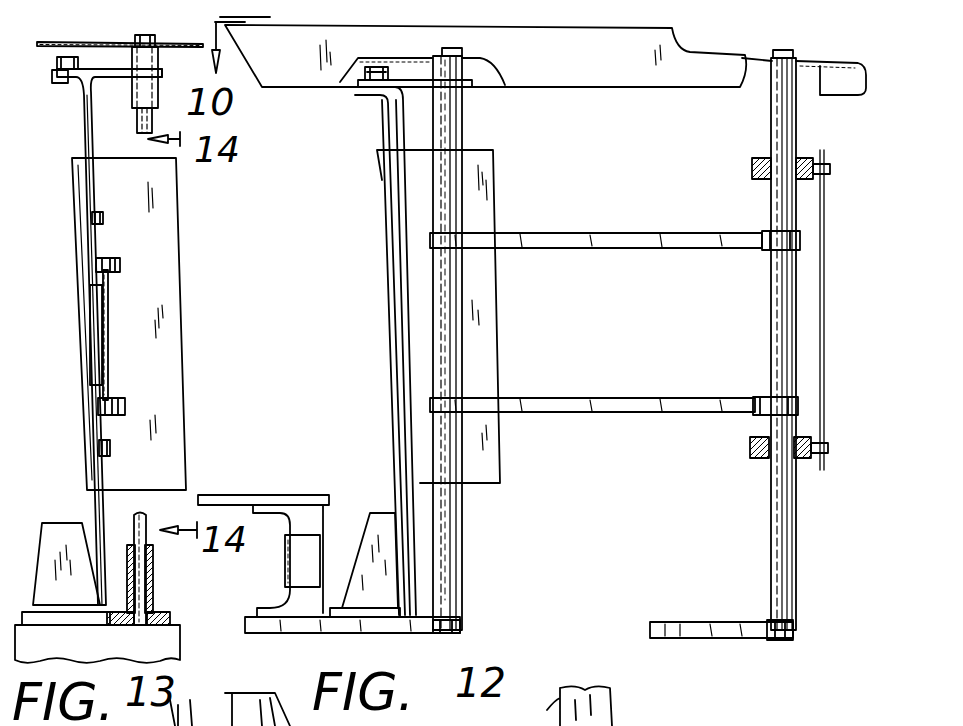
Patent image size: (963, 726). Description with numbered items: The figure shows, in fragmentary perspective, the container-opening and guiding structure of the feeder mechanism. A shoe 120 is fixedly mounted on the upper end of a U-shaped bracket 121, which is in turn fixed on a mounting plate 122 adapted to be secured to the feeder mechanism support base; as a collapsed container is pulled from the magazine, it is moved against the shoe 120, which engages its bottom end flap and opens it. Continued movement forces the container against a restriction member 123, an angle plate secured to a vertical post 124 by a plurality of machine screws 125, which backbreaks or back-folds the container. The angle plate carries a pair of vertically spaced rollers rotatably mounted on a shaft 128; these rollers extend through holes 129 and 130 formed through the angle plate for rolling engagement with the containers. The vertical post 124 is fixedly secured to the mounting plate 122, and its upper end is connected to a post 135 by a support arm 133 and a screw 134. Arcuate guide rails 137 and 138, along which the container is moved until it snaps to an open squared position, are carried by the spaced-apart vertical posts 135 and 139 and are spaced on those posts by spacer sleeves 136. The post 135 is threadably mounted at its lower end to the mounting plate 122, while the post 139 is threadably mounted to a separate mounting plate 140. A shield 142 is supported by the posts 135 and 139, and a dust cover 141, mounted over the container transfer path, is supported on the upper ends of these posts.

In FIG. 12, the shoe 120 is at (242, 495).
In FIG. 12, the U-shaped bracket 121 is at (313, 531).
In FIG. 13, the mounting plate 122 is at (32, 614).
In FIG. 12, the mounting plate 122 is at (462, 624).
In FIG. 13, the restriction member 123 is at (181, 236).
In FIG. 12, the restriction member 123 is at (486, 215).
In FIG. 13, the vertical post 124 is at (96, 191).
In FIG. 12, the vertical post 124 is at (392, 126).
In FIG. 13, the machine screws 125 is at (101, 222).
In FIG. 13, the shaft 128 is at (108, 352).
In FIG. 13, the hole 129 is at (121, 266).
In FIG. 13, the hole 130 is at (126, 402).
In FIG. 12, the support arm 133 is at (413, 88).
In FIG. 12, the screw 134 is at (375, 68).
In FIG. 13, the post 135 is at (146, 530).
In FIG. 12, the post 135 is at (455, 136).
In FIG. 13, the spacer sleeves 136 is at (153, 586).
In FIG. 12, the spacer sleeves 136 is at (465, 76).
In FIG. 12, the guide rail 137 is at (648, 248).
In FIG. 12, the guide rail 138 is at (650, 399).
In FIG. 12, the post 139 is at (772, 316).
In FIG. 12, the mounting plate 140 is at (722, 630).
In FIG. 12, the dust cover 141 is at (636, 72).
In FIG. 12, the shield 142 is at (826, 302).